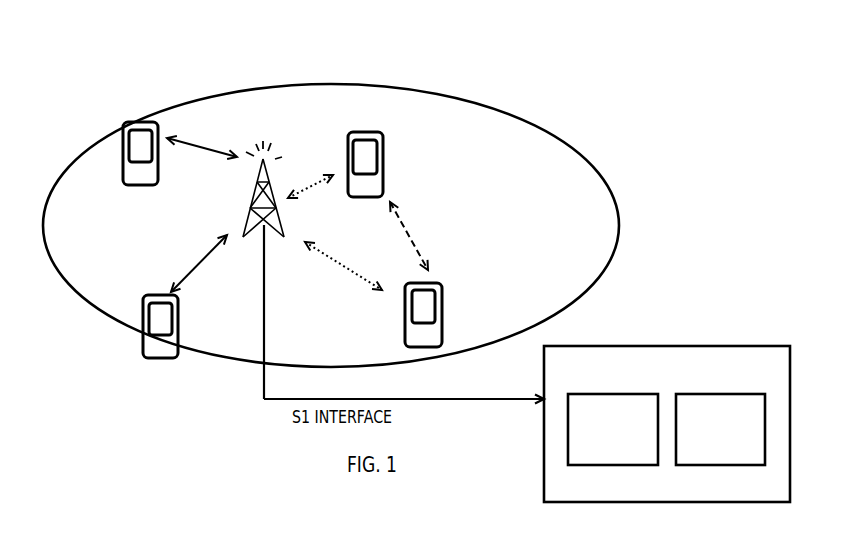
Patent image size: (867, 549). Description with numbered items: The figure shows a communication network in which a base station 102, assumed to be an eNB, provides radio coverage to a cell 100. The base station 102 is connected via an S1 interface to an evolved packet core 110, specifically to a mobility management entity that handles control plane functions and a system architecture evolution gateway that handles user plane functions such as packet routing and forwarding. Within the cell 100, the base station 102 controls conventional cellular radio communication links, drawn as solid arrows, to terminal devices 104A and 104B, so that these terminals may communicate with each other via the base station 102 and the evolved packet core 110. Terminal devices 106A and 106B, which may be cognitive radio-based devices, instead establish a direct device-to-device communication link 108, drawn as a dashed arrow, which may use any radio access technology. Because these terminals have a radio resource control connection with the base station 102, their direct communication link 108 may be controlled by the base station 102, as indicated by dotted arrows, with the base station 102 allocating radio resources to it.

The cell 100 is at (548, 133).
The base station 102 is at (258, 185).
The terminal device 104A is at (143, 315).
The terminal device 104B is at (125, 131).
The terminal device 106A is at (383, 137).
The terminal device 106B is at (442, 288).
The direct communication link 108 is at (403, 227).
The evolved packet core 110 is at (667, 424).